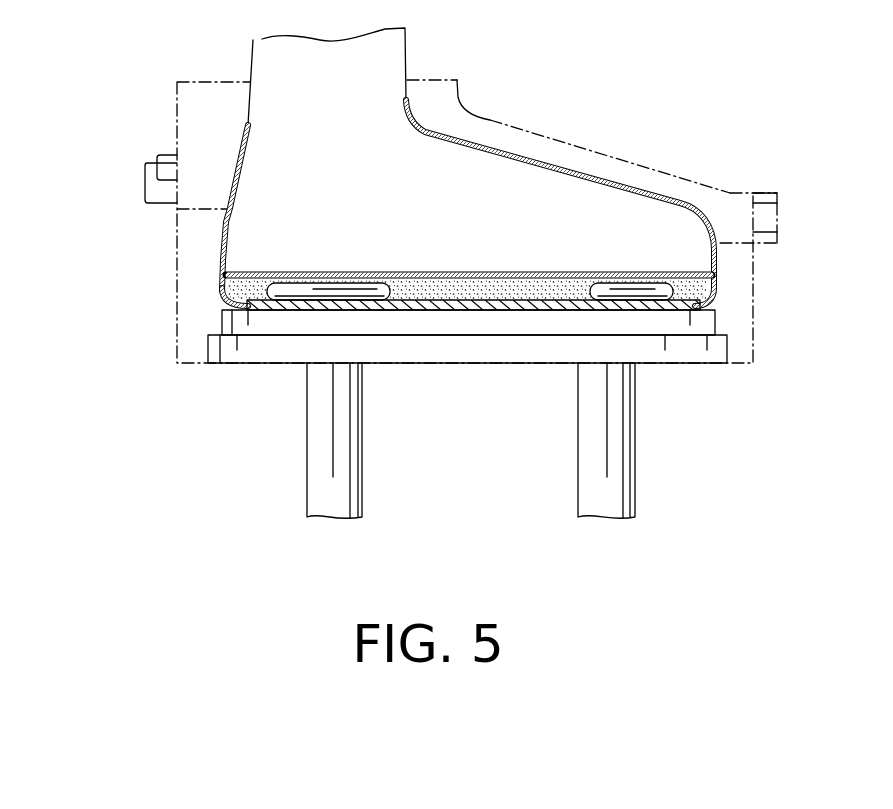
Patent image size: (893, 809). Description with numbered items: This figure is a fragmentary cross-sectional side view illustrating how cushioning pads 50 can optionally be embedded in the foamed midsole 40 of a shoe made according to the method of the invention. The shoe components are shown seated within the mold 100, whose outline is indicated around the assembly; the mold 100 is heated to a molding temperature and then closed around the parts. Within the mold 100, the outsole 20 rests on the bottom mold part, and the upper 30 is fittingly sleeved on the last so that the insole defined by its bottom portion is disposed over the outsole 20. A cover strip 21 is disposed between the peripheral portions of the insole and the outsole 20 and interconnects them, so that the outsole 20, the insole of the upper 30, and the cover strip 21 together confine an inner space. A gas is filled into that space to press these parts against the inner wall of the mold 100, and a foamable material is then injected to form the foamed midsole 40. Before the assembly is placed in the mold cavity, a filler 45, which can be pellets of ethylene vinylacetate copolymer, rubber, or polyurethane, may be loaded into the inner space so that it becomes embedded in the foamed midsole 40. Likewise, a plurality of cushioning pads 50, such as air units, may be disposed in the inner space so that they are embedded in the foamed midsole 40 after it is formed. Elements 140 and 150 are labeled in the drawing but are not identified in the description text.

The mold 100 is at (173, 128).
The heel clip 140 is at (227, 216).
The toe clip 150 is at (716, 242).
The upper 30 is at (536, 168).
The cover strip 21 is at (220, 259).
The outsole 20 is at (216, 306).
The cushioning pads 50 is at (305, 292).
The filler 45 is at (438, 290).
The foamed midsole 40 is at (478, 302).